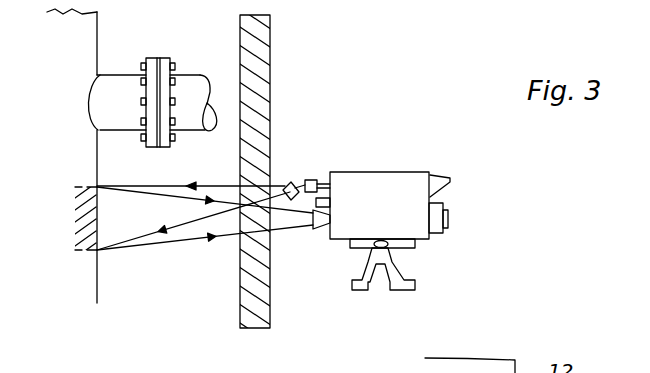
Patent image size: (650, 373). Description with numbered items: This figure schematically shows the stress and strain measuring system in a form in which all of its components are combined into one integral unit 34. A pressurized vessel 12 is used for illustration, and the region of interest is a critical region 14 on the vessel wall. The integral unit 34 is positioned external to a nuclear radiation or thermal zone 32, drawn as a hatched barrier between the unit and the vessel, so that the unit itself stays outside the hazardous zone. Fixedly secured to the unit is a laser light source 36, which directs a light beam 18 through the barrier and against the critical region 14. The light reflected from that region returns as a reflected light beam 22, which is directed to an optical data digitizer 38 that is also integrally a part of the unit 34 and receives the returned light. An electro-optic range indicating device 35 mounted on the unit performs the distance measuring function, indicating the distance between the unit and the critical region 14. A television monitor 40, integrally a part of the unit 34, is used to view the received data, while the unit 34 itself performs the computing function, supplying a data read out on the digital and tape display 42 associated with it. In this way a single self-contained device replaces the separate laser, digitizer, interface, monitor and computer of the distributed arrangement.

The pressurized vessel 12 is at (82, 35).
The critical region 14 is at (82, 186).
The light beam 18 is at (170, 185).
The reflected light beam 22 is at (173, 241).
The nuclear radiation or thermal zone 32 is at (247, 329).
The integral unit 34 is at (407, 174).
The electro-optic range indicating device 35 is at (330, 198).
The laser light source 36 is at (297, 182).
The optical data digitizer 38 is at (328, 228).
The television monitor 40 is at (452, 187).
The digital and tape display 42 is at (453, 282).